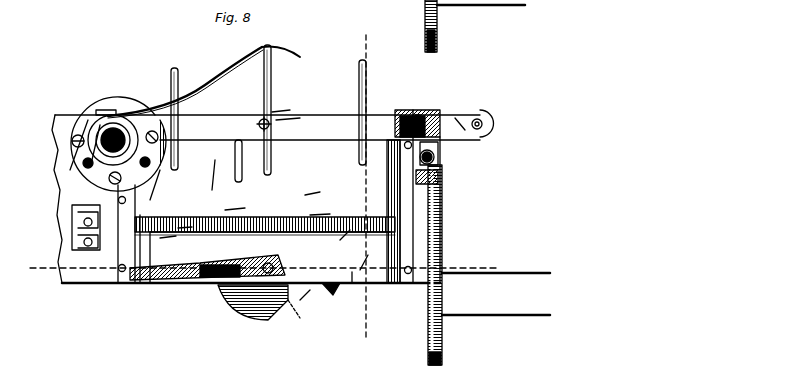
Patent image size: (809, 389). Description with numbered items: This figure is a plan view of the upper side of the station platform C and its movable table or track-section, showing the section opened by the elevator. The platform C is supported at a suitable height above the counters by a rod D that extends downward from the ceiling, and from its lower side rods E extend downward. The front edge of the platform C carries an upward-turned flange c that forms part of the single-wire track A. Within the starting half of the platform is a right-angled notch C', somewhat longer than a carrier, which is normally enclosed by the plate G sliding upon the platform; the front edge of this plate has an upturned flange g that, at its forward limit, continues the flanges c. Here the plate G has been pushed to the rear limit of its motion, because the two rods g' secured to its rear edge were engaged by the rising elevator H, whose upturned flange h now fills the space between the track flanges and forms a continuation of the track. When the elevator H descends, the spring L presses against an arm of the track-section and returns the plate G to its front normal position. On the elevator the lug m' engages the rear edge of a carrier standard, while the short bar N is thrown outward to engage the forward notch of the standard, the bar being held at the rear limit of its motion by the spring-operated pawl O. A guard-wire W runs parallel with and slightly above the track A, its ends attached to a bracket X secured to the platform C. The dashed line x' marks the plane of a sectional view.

The single-wire track A is at (355, 199).
The platform C is at (237, 199).
The right-angled notch C' is at (245, 230).
The upward-turned flange c is at (258, 288).
The rod D is at (112, 112).
The rods E is at (80, 170).
The plate or movable track-section G is at (259, 230).
The upturned flange g is at (220, 141).
The rods g' is at (374, 112).
The plate or elevator H is at (340, 248).
The upturned flange h is at (350, 285).
The spring L is at (185, 82).
The lug m' is at (253, 305).
The short bar N is at (326, 290).
The spring-operated pawl O is at (182, 270).
The guard-wire W is at (493, 169).
The bracket X is at (441, 187).
The section line x' x' is at (363, 186).